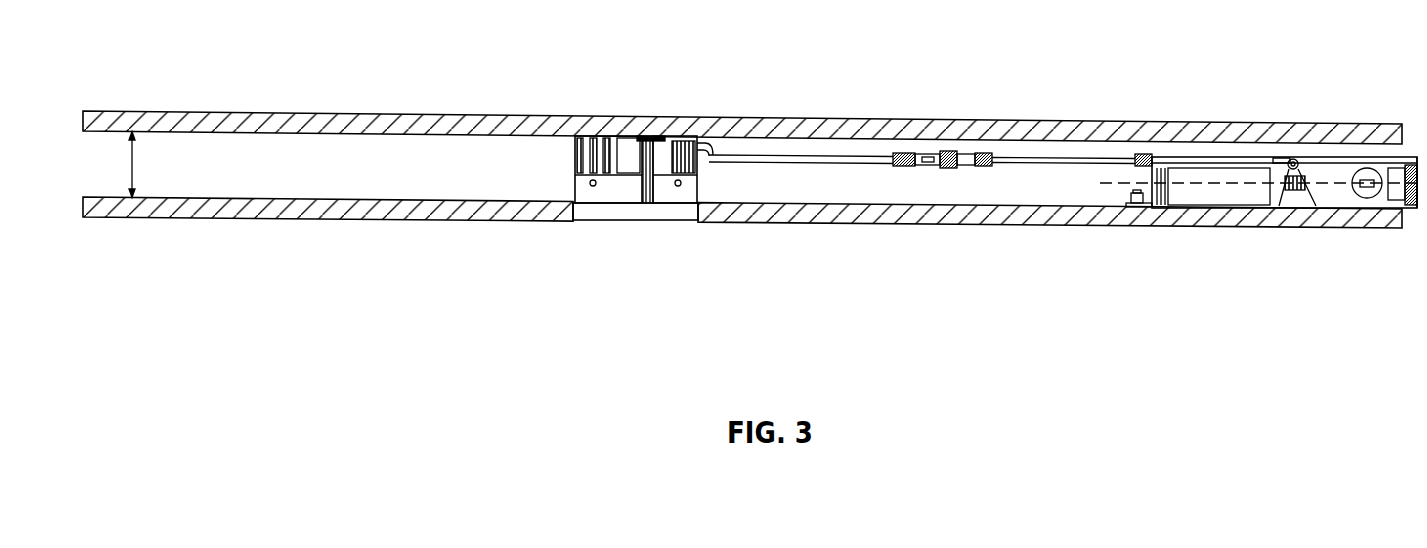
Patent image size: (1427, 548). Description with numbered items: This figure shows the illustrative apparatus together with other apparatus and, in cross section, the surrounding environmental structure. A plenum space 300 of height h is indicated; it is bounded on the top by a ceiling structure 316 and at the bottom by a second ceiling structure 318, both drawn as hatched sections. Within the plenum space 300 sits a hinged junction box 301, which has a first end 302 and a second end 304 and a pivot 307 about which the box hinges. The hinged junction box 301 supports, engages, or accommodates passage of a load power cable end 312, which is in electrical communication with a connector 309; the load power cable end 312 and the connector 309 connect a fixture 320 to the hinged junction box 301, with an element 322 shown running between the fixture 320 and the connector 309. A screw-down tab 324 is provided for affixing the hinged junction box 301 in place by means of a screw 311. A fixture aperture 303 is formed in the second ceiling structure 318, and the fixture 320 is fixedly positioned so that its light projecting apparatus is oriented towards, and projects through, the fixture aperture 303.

The plenum space 300 is at (212, 176).
The ceiling structure 316 is at (283, 133).
The second ceiling structure 318 is at (225, 204).
The fixture aperture 303 is at (633, 222).
The fixture 320 is at (575, 188).
The push rod 322 is at (802, 164).
The connector 309 is at (900, 168).
The load power cable end 312 is at (1142, 153).
The screw 311 is at (1138, 192).
The screw-down tab 324 is at (1137, 206).
The second end 304 is at (1215, 199).
The pivot 307 is at (1292, 144).
The first end 302 is at (1393, 199).
The hinged junction box 301 is at (1416, 137).